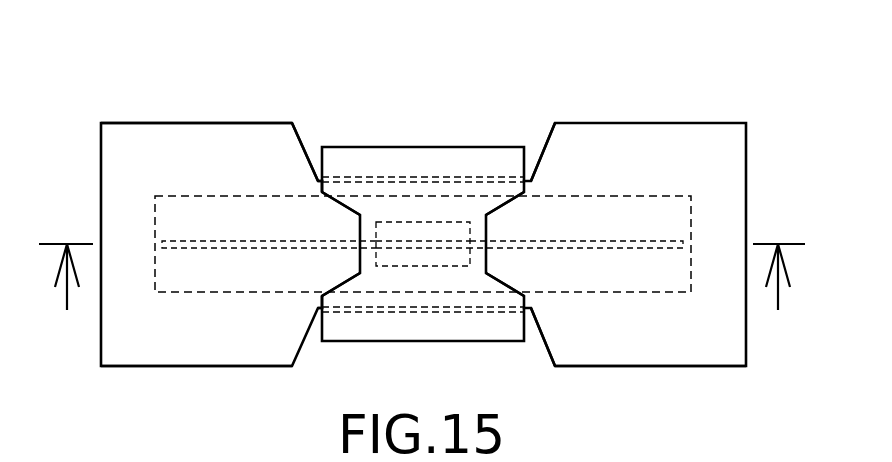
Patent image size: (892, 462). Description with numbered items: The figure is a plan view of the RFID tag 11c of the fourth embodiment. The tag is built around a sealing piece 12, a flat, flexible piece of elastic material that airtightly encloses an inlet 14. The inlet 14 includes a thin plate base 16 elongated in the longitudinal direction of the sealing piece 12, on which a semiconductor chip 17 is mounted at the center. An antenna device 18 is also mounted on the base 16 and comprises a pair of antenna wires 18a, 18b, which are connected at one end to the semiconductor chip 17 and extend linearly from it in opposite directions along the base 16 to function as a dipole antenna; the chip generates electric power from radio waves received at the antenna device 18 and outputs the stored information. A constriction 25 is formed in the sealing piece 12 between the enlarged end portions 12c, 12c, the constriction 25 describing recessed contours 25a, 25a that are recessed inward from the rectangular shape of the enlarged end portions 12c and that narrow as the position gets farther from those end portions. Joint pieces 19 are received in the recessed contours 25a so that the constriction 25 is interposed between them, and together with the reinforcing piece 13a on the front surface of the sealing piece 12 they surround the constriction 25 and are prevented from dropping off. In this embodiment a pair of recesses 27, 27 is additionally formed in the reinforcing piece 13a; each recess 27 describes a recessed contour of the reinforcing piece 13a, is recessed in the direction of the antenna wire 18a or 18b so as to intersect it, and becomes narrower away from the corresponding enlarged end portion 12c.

The RFID tag 11c is at (203, 73).
The sealing piece 12 is at (143, 123).
The enlarged end portions 12c is at (210, 366).
The reinforcing piece 13a is at (427, 152).
The inlet 14 is at (657, 162).
The base 16 is at (647, 293).
The semiconductor chip 17 is at (377, 232).
The antenna device 18 is at (249, 204).
The antenna wire 18a is at (218, 245).
The antenna wire 18b is at (633, 228).
The joint piece 19 is at (327, 165).
The constriction 25 is at (318, 98).
The recessed contour 25a is at (549, 137).
The recess 27 is at (503, 207).